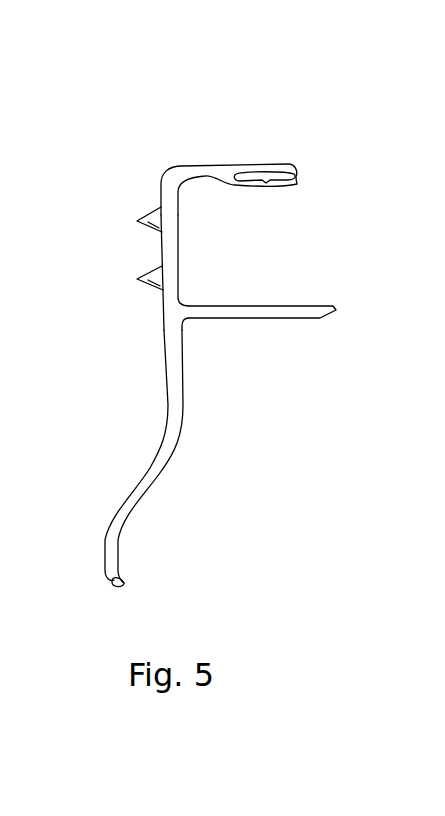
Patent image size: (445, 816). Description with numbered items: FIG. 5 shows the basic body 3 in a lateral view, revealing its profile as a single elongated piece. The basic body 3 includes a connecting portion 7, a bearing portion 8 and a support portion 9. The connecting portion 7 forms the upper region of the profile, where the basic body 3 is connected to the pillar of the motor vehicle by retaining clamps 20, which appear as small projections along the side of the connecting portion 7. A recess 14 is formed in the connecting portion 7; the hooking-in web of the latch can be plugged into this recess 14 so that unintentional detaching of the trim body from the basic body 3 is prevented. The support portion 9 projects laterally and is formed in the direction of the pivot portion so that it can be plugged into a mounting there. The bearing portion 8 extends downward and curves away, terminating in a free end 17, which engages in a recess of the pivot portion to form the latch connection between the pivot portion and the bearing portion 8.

The basic body 3 is at (217, 325).
The recess 14 is at (304, 166).
The connecting portion 7 is at (172, 247).
The retaining clamps 20 is at (140, 223).
The support portion 9 is at (336, 312).
The bearing portion 8 is at (182, 422).
The free end 17 is at (125, 584).